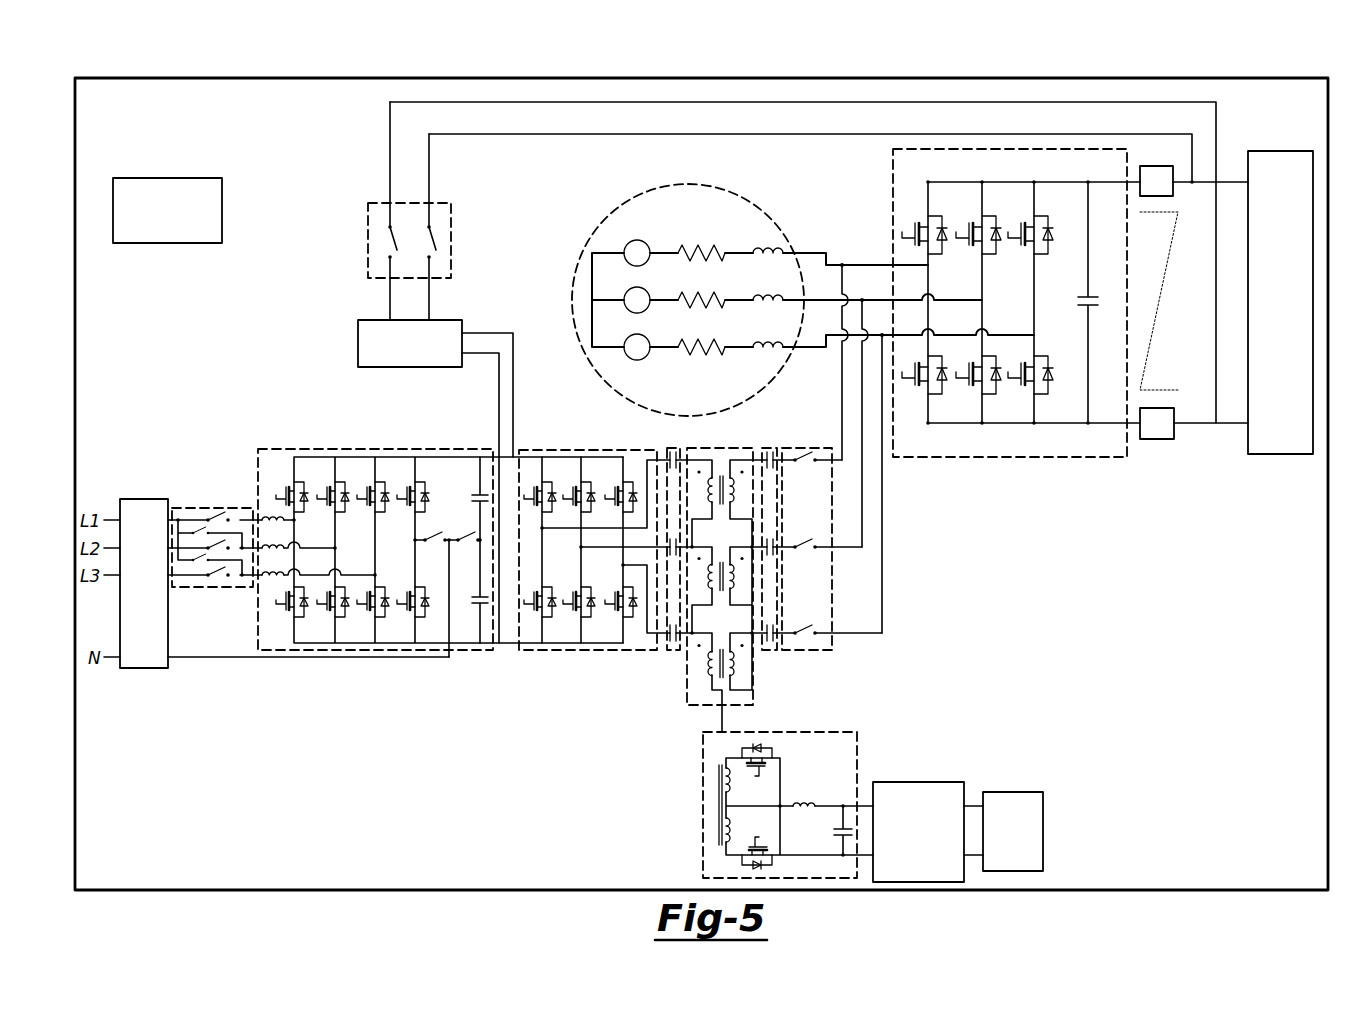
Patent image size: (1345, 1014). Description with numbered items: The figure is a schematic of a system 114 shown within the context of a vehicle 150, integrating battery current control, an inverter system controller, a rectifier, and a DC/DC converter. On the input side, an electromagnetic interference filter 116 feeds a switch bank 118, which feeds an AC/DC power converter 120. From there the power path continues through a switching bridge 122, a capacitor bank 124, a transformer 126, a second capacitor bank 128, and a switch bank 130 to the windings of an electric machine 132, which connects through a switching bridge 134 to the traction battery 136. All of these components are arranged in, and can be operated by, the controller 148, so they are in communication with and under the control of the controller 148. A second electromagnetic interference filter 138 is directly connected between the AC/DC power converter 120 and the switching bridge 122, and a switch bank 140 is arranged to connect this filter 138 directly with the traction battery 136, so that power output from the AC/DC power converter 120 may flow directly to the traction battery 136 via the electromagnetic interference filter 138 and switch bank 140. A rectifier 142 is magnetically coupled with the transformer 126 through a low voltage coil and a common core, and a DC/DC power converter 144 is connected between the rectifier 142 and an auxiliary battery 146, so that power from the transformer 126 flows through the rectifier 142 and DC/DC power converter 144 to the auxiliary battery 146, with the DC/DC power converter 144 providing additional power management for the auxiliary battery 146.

The system 114 is at (184, 786).
The electromagnetic interference filter 116 is at (146, 499).
The switch bank 118 is at (213, 508).
The AC/DC power converter 120 is at (322, 449).
The switching bridge 122 is at (583, 650).
The capacitor bank 124 is at (672, 650).
The transformer 126 is at (737, 448).
The capacitor bank 128 is at (768, 650).
The switch bank 130 is at (802, 650).
The electric machine 132 is at (573, 300).
The switching bridge 134 is at (893, 182).
The traction battery 136 is at (1281, 454).
The electromagnetic interference filter 138 is at (358, 343).
The switch bank 140 is at (368, 242).
The rectifier 142 is at (702, 805).
The DC/DC power converter 144 is at (886, 782).
The auxiliary battery 146 is at (1043, 832).
The controller 148 is at (167, 178).
The vehicle 150 is at (703, 78).